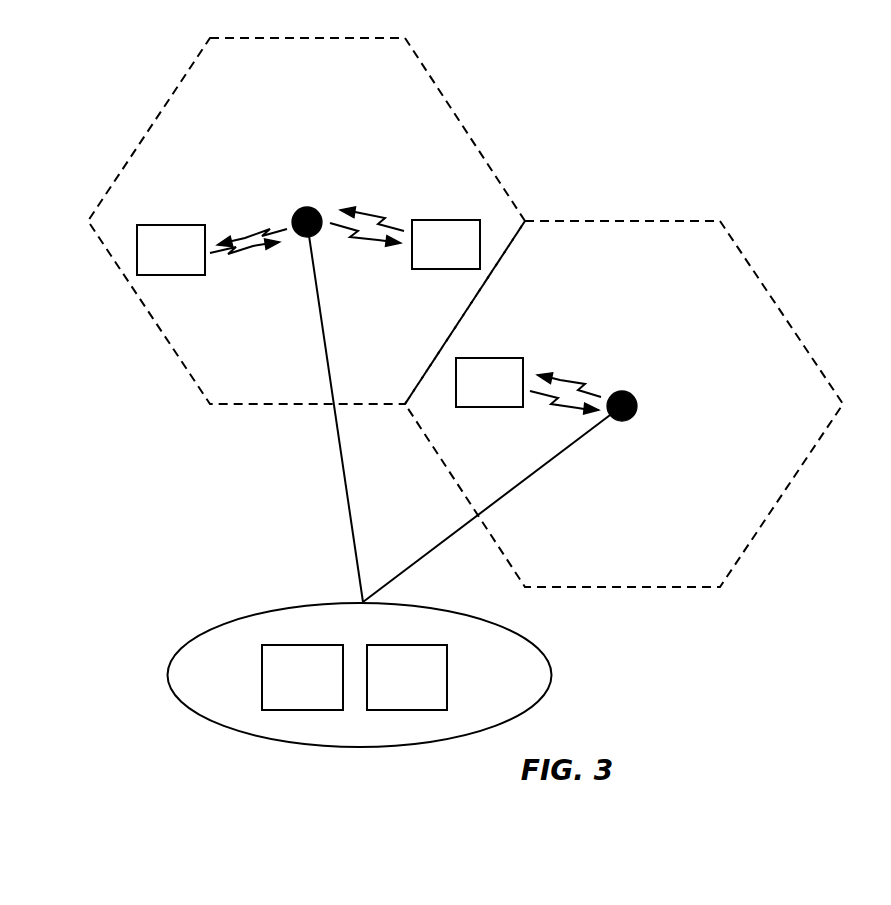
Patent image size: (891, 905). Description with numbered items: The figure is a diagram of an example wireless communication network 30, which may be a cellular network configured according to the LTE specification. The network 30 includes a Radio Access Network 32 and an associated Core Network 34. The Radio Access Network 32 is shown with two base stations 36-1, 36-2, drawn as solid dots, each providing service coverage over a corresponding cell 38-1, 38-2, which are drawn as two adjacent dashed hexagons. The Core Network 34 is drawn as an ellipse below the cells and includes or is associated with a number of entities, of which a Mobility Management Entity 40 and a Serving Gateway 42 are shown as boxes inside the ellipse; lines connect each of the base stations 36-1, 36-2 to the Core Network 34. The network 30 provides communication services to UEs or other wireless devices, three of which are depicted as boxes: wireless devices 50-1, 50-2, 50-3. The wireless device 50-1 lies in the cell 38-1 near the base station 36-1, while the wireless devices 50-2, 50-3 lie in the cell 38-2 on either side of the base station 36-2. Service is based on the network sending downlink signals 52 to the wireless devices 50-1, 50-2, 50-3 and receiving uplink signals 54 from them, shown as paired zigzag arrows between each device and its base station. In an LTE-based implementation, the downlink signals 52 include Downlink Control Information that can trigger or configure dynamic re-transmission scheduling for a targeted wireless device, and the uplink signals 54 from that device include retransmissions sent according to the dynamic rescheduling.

The wireless communication network 30 is at (690, 141).
The Radio Access Network 32 is at (262, 438).
The Core Network 34 is at (208, 628).
The base station 36-1 is at (633, 395).
The base station 36-2 is at (299, 210).
The cell 38-1 is at (769, 296).
The cell 38-2 is at (463, 125).
The Mobility Management Entity 40 is at (291, 701).
The Serving Gateway 42 is at (396, 701).
The wireless device 50-1 is at (469, 392).
The wireless device 50-2 is at (425, 254).
The wireless device 50-3 is at (150, 259).
The downlink signal 52 is at (256, 228).
The uplink signal 54 is at (240, 252).